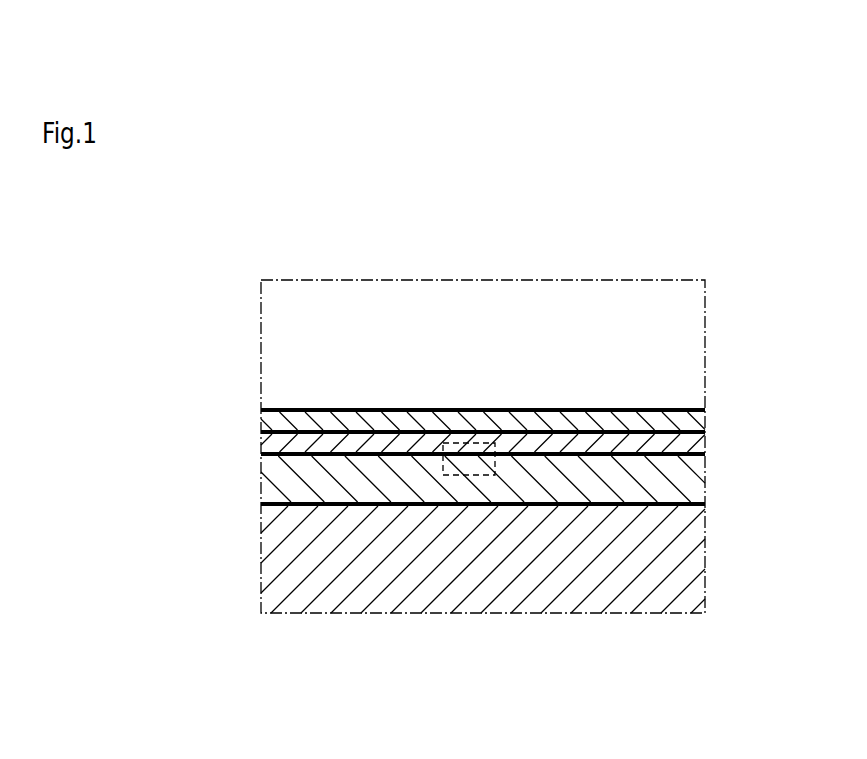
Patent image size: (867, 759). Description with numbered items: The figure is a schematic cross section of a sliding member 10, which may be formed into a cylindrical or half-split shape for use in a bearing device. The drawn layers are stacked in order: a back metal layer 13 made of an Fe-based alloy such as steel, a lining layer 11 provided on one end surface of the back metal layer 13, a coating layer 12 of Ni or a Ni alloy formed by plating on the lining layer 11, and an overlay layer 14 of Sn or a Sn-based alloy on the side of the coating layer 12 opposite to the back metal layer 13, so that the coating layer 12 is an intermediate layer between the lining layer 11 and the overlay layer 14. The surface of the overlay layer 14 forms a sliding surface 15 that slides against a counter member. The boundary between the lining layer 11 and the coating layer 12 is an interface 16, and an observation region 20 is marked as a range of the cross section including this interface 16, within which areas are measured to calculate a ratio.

The sliding member 10 is at (303, 377).
The lining layer 11 is at (273, 485).
The coating layer 12 is at (268, 444).
The back metal layer 13 is at (277, 565).
The overlay layer 14 is at (263, 416).
The sliding surface 15 is at (640, 408).
The interface 16 is at (653, 451).
The observation region 20 is at (471, 480).